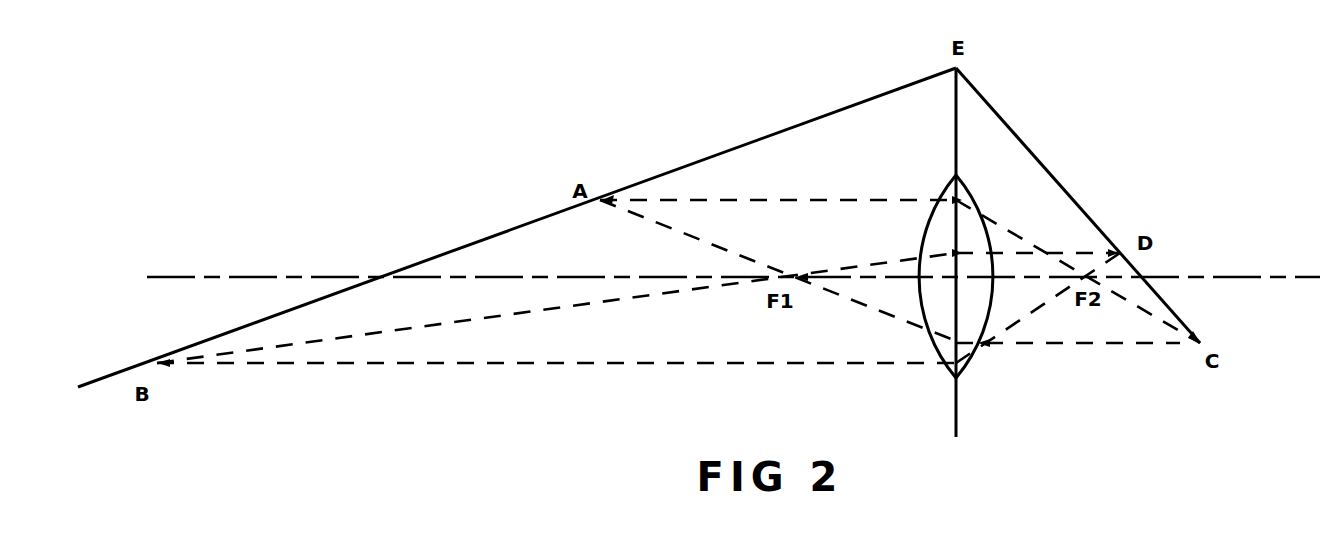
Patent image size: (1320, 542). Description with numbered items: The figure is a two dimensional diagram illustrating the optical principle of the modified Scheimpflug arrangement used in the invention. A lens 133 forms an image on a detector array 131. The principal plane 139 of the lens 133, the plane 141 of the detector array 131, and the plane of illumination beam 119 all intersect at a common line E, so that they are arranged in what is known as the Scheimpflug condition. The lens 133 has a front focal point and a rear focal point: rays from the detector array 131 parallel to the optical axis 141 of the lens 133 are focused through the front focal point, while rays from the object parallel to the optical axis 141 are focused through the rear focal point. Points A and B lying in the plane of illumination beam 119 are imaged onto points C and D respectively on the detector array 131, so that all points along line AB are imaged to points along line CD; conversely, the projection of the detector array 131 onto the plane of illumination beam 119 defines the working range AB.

The plane of illumination beam 119 is at (783, 129).
The plane of the detector array 141 is at (1056, 174).
The detector array 131 is at (1137, 264).
The lens 133 is at (970, 360).
The principal plane of the lens 139 is at (953, 403).